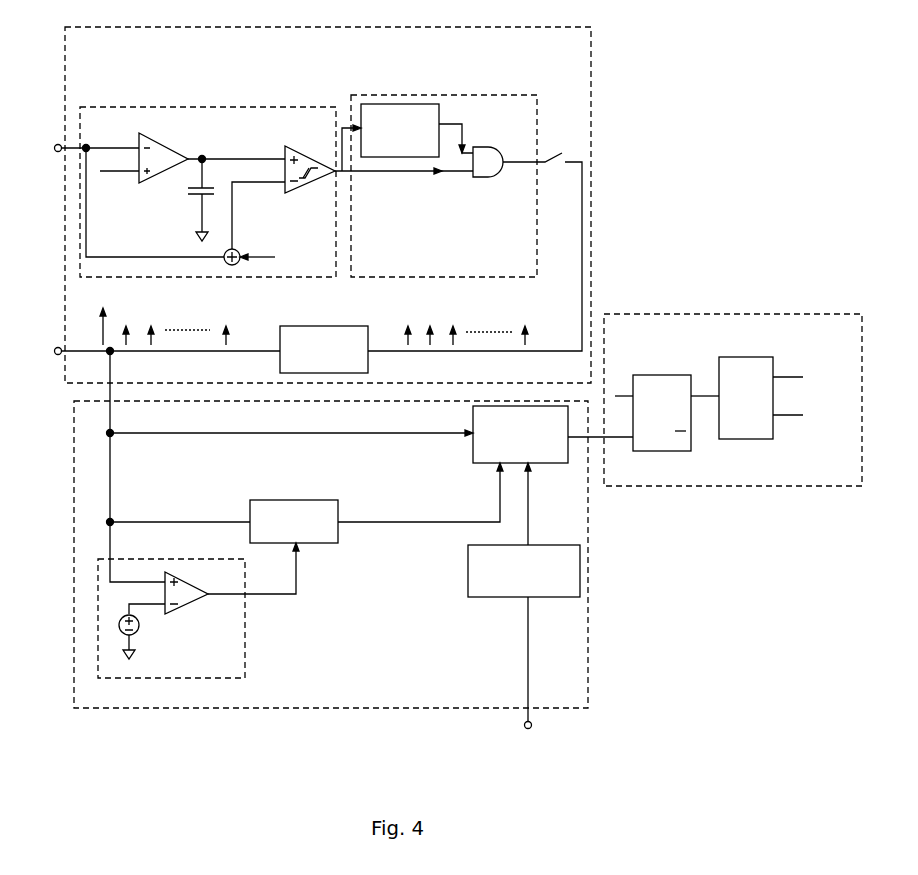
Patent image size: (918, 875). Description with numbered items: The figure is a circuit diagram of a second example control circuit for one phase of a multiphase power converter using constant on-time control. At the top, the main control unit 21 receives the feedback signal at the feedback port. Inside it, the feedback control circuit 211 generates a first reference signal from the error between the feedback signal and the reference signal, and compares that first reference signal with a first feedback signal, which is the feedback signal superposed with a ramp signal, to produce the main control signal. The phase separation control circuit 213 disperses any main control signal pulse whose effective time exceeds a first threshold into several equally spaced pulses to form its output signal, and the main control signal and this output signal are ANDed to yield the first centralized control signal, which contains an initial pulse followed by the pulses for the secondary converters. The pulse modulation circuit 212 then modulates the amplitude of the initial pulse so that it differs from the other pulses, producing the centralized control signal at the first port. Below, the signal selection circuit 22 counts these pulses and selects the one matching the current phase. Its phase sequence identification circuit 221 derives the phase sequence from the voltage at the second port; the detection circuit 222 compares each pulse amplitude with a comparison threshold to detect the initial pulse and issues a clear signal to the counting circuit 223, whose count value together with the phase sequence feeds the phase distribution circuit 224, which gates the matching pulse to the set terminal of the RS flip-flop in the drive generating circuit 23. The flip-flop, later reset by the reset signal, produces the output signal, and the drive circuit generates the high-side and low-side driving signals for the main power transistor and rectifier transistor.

The main control unit 21 is at (412, 27).
The feedback control circuit 211 is at (245, 107).
The pulse modulation circuit 212 is at (297, 326).
The phase separation control circuit 213 is at (484, 95).
The signal selection circuit 22 is at (588, 638).
The phase sequence identification circuit 221 is at (508, 598).
The detection circuit 222 is at (245, 653).
The counting circuit 223 is at (265, 500).
The phase distribution circuit 224 is at (473, 453).
The drive generating circuit 23 is at (766, 312).